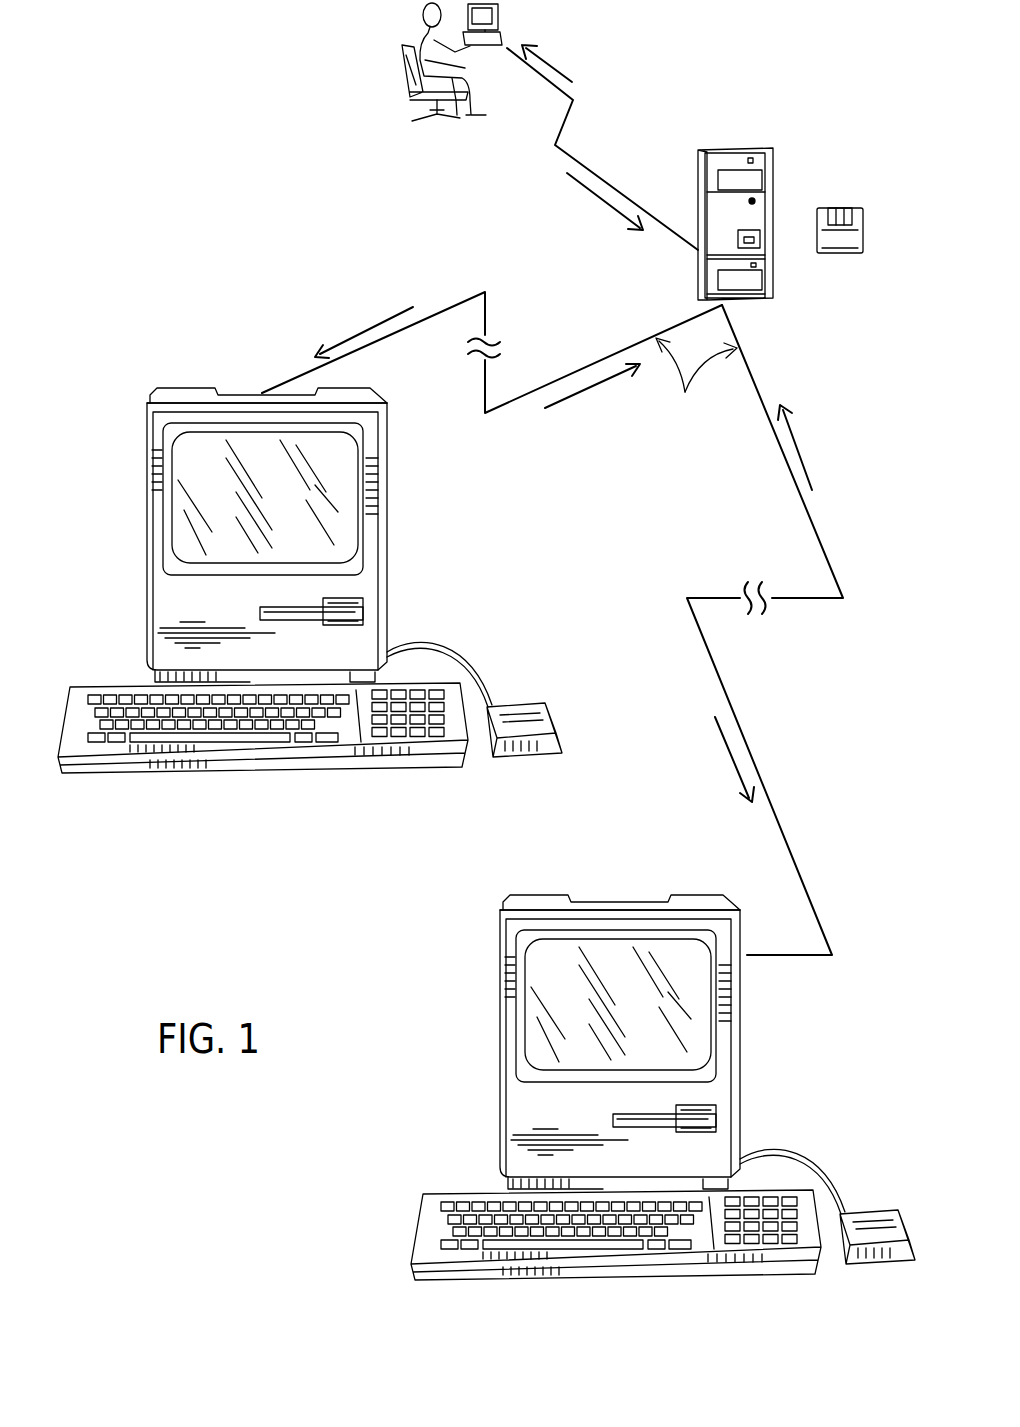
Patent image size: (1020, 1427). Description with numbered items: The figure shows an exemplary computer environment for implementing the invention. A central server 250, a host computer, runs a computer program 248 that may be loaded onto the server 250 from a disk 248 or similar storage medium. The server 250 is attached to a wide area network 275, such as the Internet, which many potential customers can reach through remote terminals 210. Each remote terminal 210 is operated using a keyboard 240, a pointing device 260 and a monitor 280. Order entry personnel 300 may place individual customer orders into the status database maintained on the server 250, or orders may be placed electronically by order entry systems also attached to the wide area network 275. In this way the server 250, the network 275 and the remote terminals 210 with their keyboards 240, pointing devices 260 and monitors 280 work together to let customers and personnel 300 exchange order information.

The remote terminal 210 is at (140, 553).
The keyboard 240 is at (312, 763).
The computer program 248 is at (866, 218).
The server 250 is at (728, 148).
The pointing device 260 is at (508, 700).
The wide area network 275 is at (696, 381).
The monitor 280 is at (307, 508).
The order entry personnel 300 is at (405, 22).